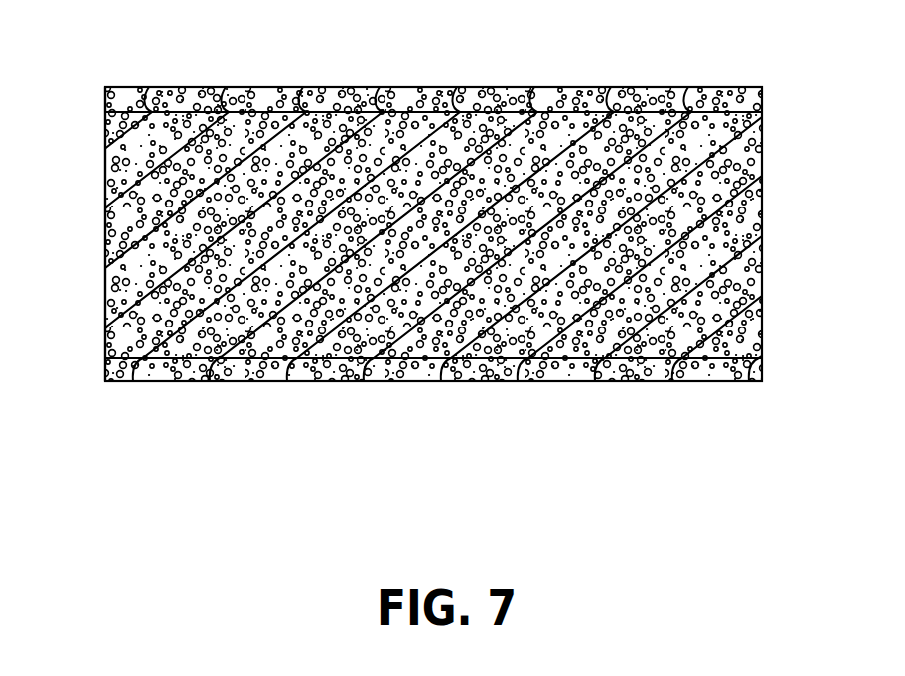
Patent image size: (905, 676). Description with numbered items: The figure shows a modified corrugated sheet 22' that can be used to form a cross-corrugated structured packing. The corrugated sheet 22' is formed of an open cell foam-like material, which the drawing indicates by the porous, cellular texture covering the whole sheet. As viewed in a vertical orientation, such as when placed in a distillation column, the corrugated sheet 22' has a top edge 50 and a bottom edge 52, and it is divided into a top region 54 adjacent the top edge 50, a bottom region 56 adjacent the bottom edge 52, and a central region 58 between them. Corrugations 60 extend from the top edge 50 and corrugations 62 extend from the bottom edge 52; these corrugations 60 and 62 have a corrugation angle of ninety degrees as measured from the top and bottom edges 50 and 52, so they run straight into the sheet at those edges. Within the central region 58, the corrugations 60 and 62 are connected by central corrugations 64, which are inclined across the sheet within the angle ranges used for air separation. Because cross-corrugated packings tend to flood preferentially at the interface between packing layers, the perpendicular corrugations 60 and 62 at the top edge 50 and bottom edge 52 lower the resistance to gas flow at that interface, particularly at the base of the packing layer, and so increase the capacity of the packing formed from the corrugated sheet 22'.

The corrugated sheet 22' is at (231, 509).
The top edge 50 is at (432, 96).
The bottom edge 52 is at (483, 381).
The top region 54 is at (515, 96).
The bottom region 56 is at (653, 381).
The central region 58 is at (105, 222).
The corrugations 60 is at (298, 102).
The corrugations 62 is at (290, 381).
The central corrugations 64 is at (722, 271).